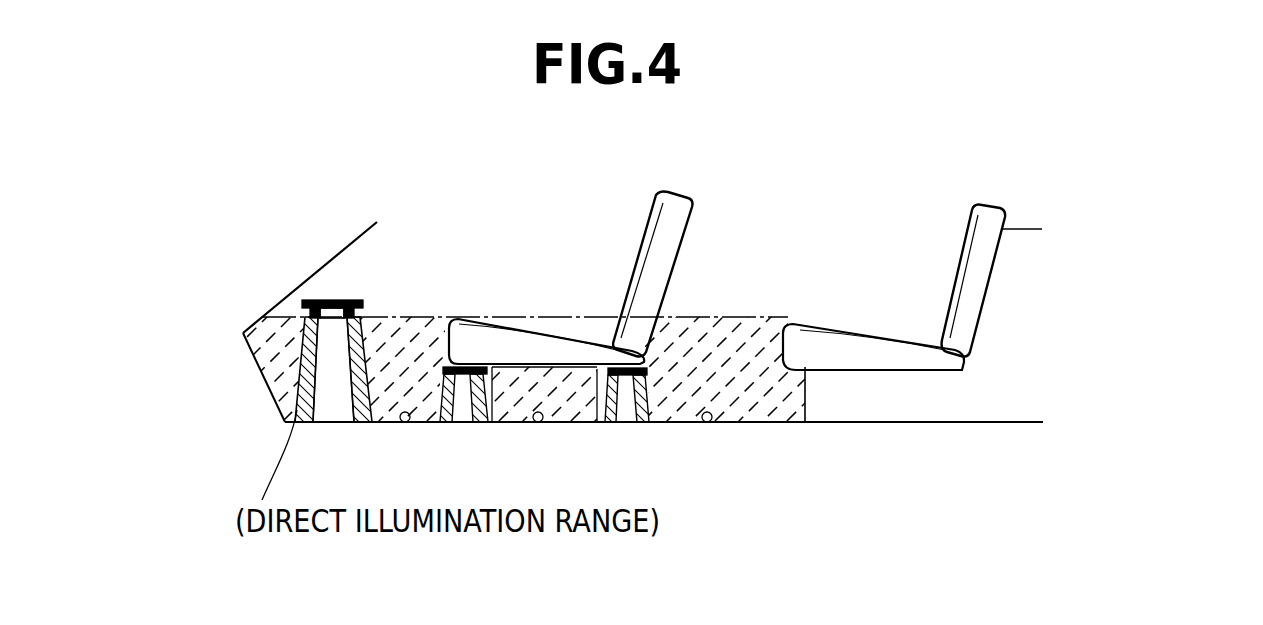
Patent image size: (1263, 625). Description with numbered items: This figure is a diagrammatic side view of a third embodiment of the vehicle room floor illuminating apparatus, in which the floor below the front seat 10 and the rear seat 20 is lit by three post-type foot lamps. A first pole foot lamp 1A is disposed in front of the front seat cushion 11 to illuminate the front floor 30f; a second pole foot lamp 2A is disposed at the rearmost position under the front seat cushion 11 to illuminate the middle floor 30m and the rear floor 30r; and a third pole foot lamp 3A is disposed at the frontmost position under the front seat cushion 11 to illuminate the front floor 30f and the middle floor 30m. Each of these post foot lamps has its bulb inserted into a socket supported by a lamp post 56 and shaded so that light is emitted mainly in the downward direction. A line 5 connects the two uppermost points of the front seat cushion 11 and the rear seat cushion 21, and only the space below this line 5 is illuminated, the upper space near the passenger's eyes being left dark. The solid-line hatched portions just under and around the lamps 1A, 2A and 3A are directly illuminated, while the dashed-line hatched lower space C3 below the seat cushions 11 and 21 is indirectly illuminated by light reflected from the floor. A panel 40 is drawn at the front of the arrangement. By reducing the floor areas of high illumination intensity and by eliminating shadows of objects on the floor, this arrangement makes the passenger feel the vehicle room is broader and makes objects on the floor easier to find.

The first pole foot lamp 1A is at (474, 374).
The second pole foot lamp 2A is at (650, 370).
The third pole foot lamp 3A is at (447, 365).
The line 5 is at (691, 396).
The front seat 10 is at (678, 212).
The front seat cushion 11 is at (563, 357).
The rear seat 20 is at (1002, 208).
The rear seat cushion 21 is at (895, 363).
The front floor 30f is at (410, 421).
The middle floor 30m is at (543, 421).
The rear floor 30r is at (712, 421).
The instrument panel 40 is at (338, 255).
The lamp post 56 is at (330, 412).
The lower space C3 is at (753, 383).